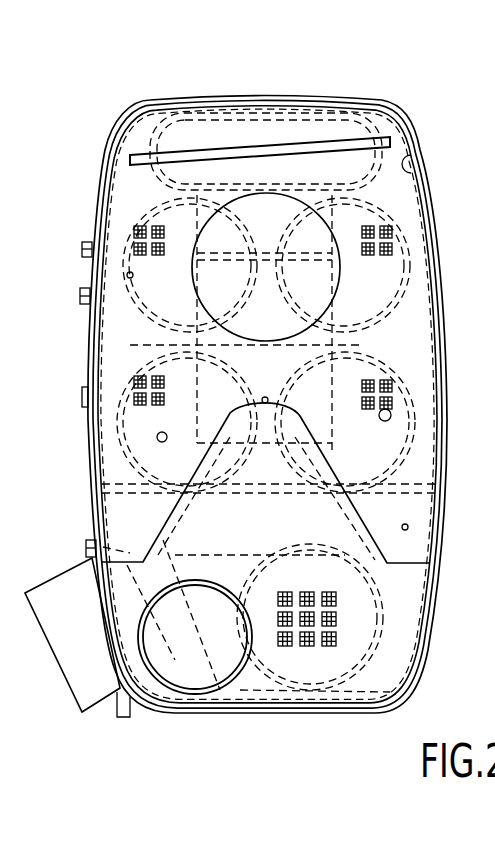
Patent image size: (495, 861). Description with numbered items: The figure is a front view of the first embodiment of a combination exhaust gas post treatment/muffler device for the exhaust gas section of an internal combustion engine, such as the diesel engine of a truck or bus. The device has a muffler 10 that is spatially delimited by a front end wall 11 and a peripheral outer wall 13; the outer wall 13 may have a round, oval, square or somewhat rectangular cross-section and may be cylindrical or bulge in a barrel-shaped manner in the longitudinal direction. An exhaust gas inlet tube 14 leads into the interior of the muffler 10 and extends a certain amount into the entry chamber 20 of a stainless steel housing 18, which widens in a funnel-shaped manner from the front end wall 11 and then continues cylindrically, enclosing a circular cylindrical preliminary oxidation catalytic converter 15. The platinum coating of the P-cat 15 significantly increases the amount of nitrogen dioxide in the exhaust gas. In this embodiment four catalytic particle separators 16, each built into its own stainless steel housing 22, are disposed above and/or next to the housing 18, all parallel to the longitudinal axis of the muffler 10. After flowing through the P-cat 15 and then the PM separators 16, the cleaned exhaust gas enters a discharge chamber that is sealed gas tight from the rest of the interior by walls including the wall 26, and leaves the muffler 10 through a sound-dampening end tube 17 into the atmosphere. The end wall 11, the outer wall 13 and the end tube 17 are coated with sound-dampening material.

The muffler 10 is at (323, 93).
The front end wall 11 is at (392, 641).
The peripheral outer wall 13 is at (435, 203).
The exhaust gas inlet tube 14 is at (184, 672).
The preliminary oxidation catalytic converter 15 is at (347, 607).
The catalytic particle separator 16 is at (140, 237).
The sound-dampening end tube 17 is at (217, 122).
The housing 18 is at (340, 650).
The entry chamber 20 is at (347, 677).
The housing 22 is at (140, 210).
The wall 26 is at (396, 493).